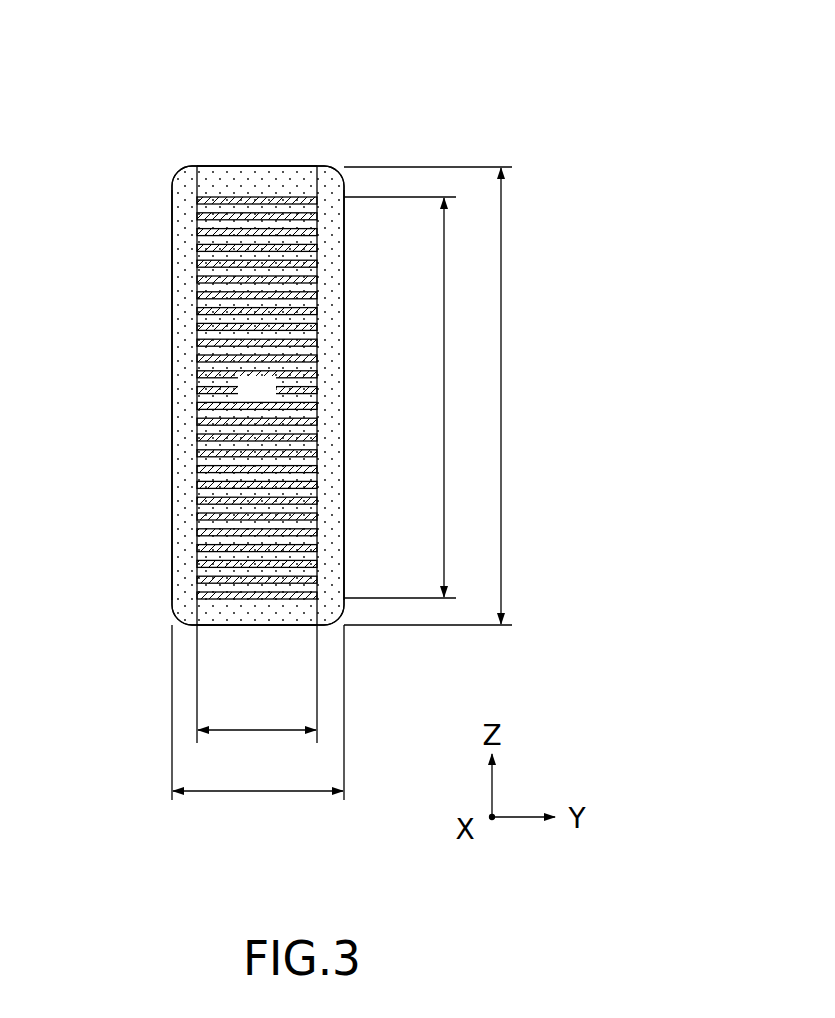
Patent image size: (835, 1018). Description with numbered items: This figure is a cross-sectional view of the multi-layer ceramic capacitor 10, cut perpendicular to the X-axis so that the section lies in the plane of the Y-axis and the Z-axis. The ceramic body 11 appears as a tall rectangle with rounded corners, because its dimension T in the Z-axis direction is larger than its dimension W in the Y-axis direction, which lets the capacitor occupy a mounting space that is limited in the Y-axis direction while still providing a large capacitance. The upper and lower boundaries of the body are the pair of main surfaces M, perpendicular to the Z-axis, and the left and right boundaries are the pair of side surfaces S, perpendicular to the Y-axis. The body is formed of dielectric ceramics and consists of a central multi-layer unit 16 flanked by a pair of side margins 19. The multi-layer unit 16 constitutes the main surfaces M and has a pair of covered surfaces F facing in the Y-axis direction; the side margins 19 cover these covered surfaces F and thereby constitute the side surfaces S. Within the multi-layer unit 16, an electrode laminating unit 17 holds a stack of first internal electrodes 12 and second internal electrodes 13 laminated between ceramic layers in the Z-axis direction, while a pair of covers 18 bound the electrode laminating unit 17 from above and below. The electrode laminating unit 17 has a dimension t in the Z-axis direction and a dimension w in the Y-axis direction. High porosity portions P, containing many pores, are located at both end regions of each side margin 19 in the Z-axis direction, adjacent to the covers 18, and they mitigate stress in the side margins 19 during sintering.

The multi-layer ceramic capacitor 10 is at (101, 64).
The ceramic body 11 is at (378, 91).
The first internal electrode 12 is at (205, 256).
The second internal electrode 13 is at (318, 272).
The multi-layer unit 16 is at (294, 136).
The electrode laminating unit 17 is at (240, 403).
The cover 18 is at (262, 180).
The side margin 19 is at (178, 356).
The high porosity portion P is at (169, 163).
The main surface M is at (218, 166).
The side surface S is at (172, 420).
The covered surface F is at (205, 488).
The dimension of the ceramic body in the Z-axis direction T is at (434, 396).
The dimension of the electrode laminating unit in the Z-axis direction t is at (402, 397).
The dimension of the ceramic body in the Y-axis direction W is at (258, 725).
The dimension of the electrode laminating unit in the Y-axis direction w is at (257, 694).